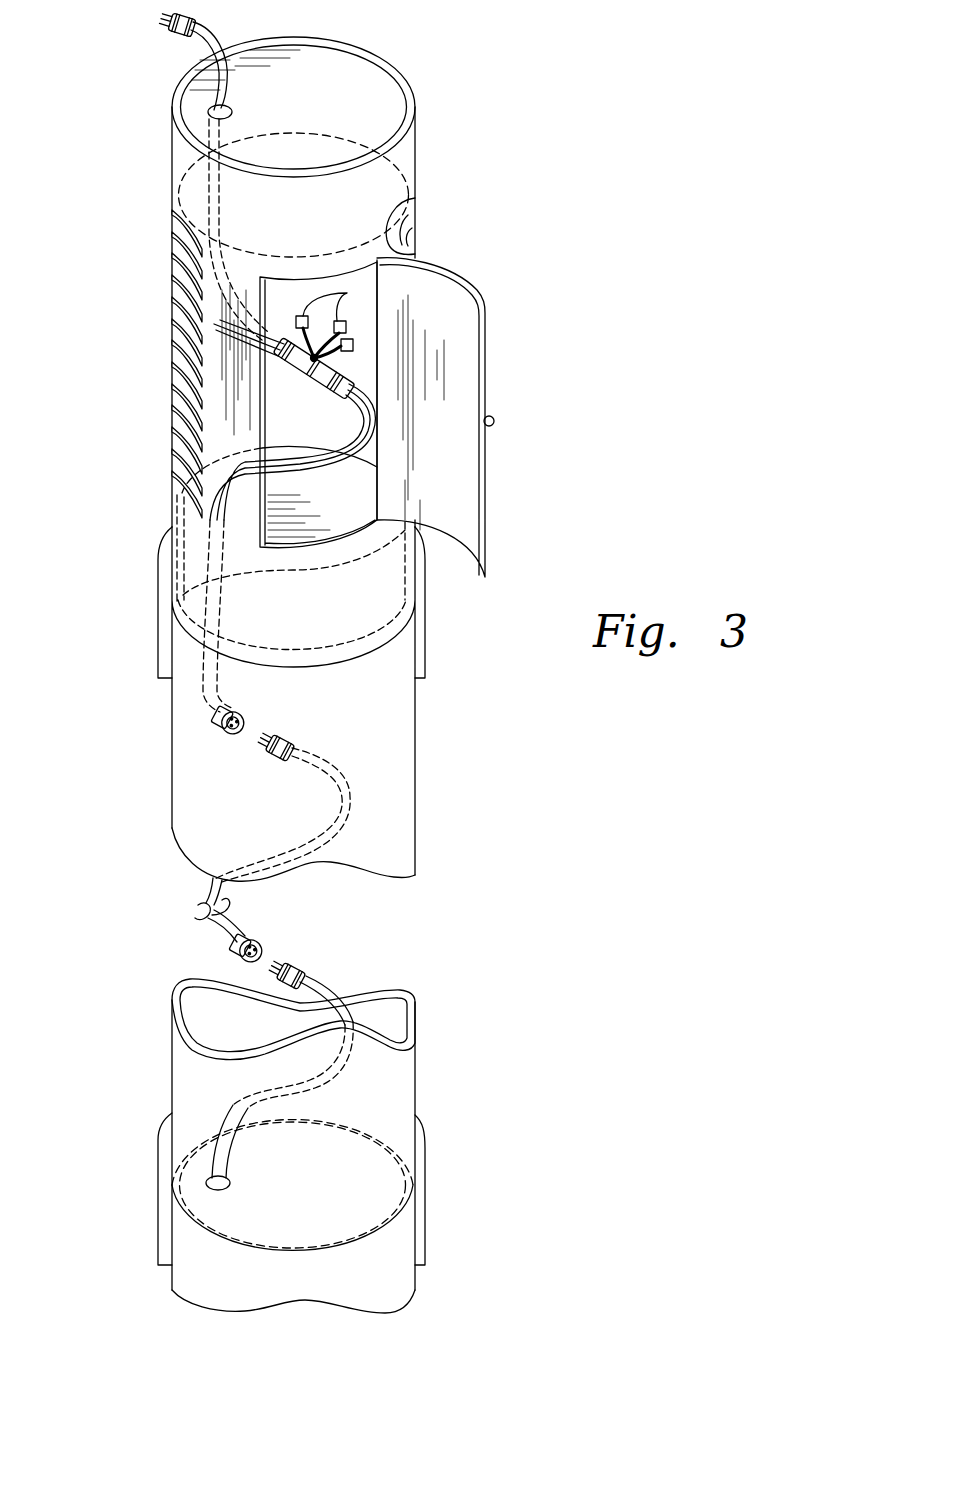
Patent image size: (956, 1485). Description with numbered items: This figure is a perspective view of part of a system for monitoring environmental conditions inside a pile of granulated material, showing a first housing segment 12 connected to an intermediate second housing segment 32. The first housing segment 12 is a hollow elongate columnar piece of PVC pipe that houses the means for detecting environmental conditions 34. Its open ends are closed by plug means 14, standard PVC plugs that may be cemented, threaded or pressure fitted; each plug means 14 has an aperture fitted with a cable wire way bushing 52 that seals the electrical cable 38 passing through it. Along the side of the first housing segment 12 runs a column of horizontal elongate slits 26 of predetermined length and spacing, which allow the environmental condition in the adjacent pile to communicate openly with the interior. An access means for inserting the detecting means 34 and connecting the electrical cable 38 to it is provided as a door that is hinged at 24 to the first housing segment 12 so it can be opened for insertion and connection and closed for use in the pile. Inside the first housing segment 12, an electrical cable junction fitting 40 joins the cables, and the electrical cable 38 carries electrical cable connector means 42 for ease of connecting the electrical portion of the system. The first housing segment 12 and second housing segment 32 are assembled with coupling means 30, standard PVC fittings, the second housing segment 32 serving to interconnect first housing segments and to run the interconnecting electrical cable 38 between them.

The first housing segment 12 is at (415, 158).
The plug means 14 is at (355, 100).
The hinge 24 is at (405, 207).
The horizontal elongate slits 26 is at (172, 298).
The coupling means 30 is at (158, 646).
The second housing segment 32 is at (415, 808).
The means for detecting environmental conditions 34 is at (347, 293).
The electrical cable 38 is at (207, 882).
The electrical cable junction fitting 40 is at (307, 374).
The electrical cable connector means 42 is at (170, 32).
The cable wire way bushing 52 is at (212, 108).